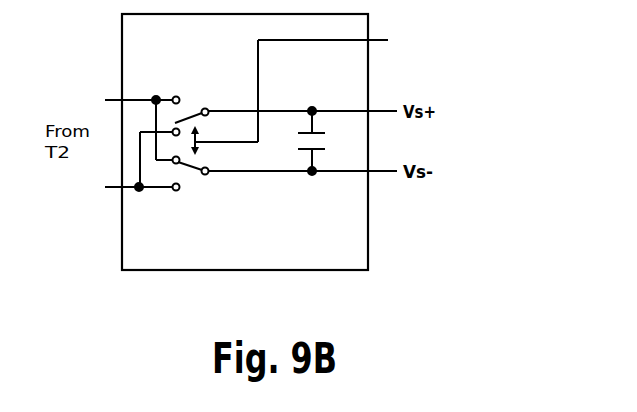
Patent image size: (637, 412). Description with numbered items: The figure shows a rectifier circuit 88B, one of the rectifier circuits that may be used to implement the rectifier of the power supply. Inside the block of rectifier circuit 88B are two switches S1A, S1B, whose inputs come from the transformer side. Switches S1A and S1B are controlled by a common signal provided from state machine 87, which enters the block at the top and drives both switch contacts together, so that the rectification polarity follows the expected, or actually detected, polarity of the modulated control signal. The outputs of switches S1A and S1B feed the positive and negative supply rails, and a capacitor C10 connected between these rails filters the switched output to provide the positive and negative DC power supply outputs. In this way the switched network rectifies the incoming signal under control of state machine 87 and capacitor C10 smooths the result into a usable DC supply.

The rectifier circuit 88B is at (172, 44).
The switch S1A is at (282, 100).
The switch S1B is at (284, 187).
The capacitor C10 is at (331, 141).
The state machine 87 is at (348, 85).